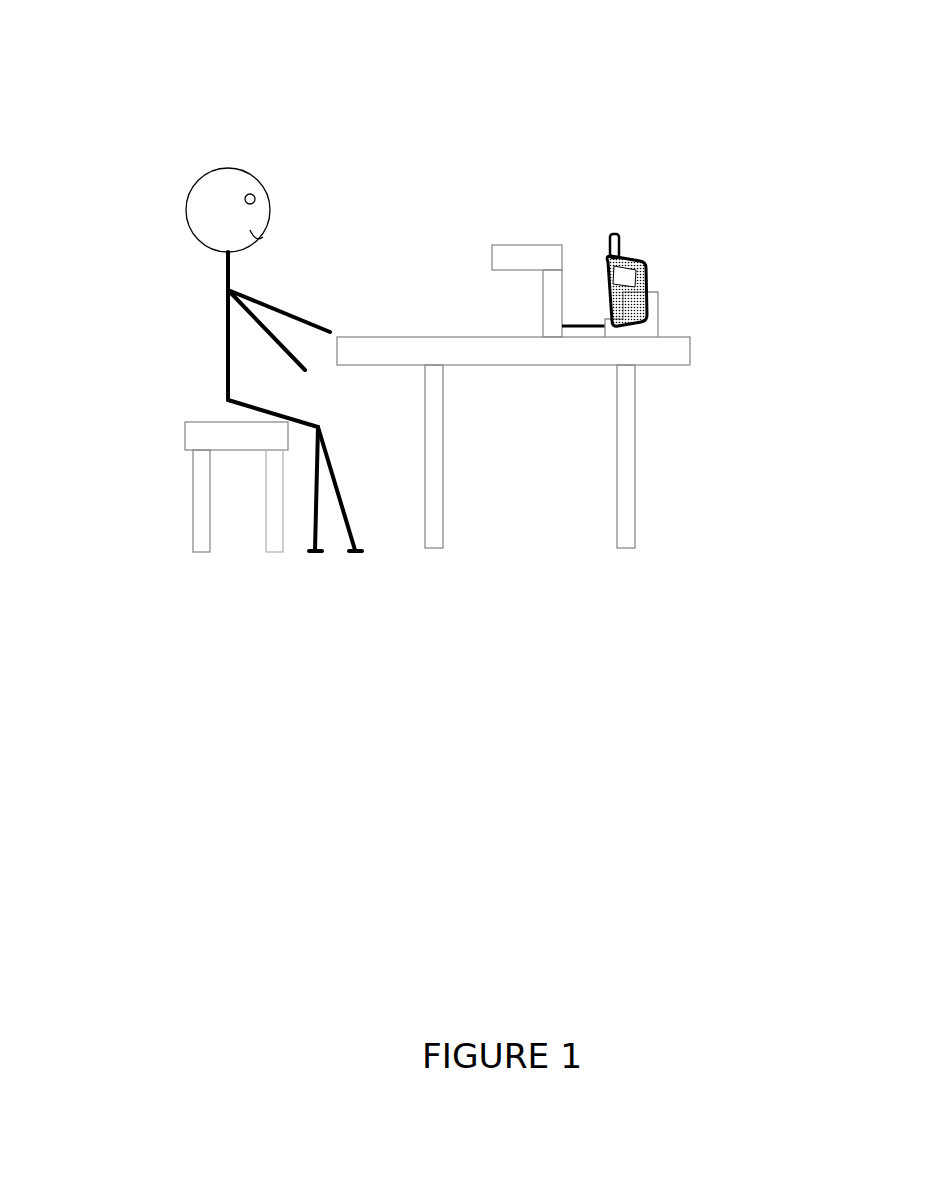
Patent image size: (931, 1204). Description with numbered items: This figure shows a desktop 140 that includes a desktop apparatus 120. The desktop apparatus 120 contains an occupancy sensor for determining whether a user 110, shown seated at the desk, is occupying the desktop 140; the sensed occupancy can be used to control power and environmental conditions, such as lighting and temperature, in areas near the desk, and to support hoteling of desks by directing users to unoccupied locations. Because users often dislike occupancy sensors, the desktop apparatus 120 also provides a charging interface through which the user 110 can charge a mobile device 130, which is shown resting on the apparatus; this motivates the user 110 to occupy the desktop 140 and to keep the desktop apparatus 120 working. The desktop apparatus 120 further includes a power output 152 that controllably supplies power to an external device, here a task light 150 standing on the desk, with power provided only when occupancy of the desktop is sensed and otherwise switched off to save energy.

The user 110 is at (205, 268).
The desktop apparatus 120 is at (655, 320).
The mobile device 130 is at (631, 245).
The desktop 140 is at (470, 343).
The task light 150 is at (525, 243).
The power output 152 is at (582, 308).